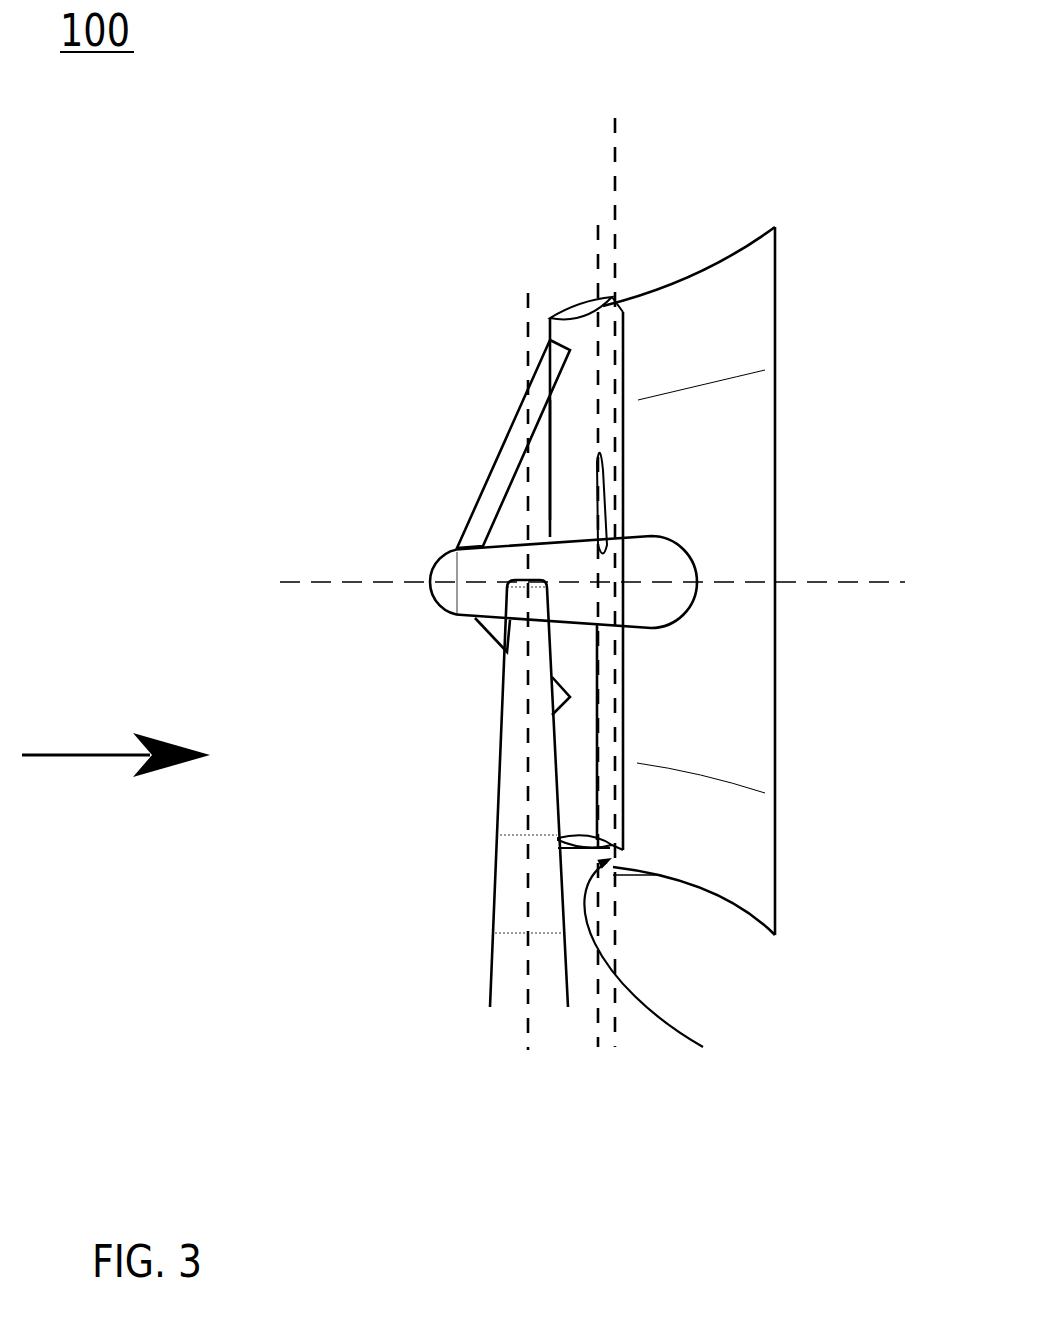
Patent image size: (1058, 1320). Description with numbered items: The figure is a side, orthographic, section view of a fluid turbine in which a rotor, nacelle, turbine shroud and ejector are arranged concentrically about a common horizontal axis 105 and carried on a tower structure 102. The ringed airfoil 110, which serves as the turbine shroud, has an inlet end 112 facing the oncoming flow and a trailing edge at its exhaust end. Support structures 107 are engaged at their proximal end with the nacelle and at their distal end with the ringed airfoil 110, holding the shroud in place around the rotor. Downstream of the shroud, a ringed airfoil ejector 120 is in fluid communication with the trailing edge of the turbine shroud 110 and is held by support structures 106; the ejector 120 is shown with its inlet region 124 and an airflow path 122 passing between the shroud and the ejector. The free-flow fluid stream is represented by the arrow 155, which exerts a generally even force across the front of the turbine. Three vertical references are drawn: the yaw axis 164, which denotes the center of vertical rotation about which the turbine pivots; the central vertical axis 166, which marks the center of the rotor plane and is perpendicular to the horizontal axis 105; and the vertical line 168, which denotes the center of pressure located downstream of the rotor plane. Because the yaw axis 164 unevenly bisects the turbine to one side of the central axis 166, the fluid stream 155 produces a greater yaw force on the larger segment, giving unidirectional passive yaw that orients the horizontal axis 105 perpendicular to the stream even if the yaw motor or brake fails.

The tower structure 102 is at (500, 873).
The horizontal axis 105 is at (378, 588).
The support structures 106 is at (583, 313).
The support structures 107 is at (493, 505).
The ringed airfoil 110 is at (400, 352).
The inlet end 112 is at (553, 473).
The ringed airfoil ejector 120 is at (750, 537).
The airflow 122 is at (659, 969).
The shroud inlet 124 is at (775, 347).
The free-flow fluid stream 155 is at (47, 752).
The vertical axis 164 is at (522, 293).
The vertical axis 166 is at (592, 232).
The vertical line 168 is at (619, 123).